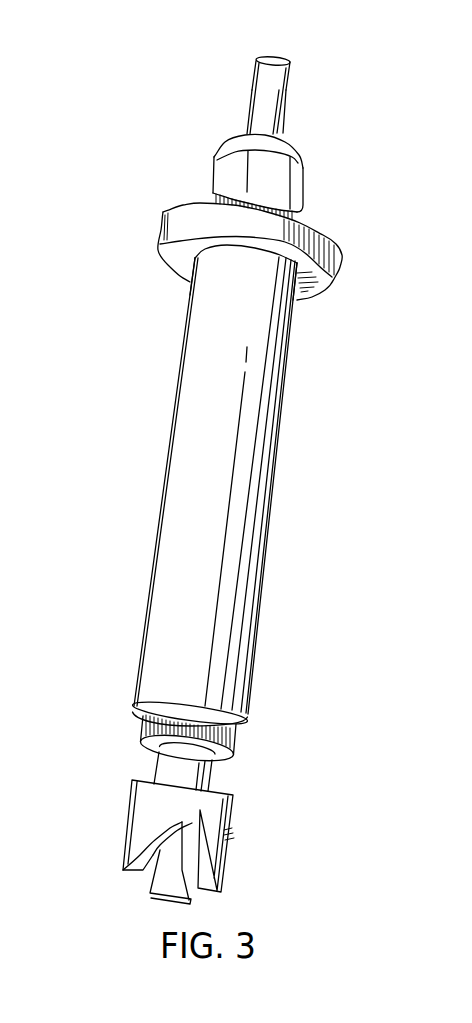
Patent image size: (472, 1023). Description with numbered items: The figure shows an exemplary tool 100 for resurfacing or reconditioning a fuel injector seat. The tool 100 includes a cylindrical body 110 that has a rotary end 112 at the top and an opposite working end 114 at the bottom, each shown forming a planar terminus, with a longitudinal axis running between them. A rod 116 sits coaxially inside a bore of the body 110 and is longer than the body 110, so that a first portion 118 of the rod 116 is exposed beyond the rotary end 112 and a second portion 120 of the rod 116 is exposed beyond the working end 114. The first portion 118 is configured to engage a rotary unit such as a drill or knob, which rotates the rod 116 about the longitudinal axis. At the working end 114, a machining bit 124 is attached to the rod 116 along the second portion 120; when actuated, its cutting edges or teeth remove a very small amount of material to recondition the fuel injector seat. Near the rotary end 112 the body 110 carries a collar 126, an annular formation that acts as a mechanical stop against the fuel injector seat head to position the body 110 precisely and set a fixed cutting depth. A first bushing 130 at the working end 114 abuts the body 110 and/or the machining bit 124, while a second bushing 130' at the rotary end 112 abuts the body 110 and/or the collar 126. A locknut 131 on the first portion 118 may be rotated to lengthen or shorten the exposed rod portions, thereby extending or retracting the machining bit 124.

The tool 100 is at (91, 441).
The body 110 is at (156, 541).
The rotary end 112 is at (191, 263).
The working end 114 is at (134, 707).
The rod 116 is at (268, 55).
The first portion of the rod 118 is at (250, 88).
The second portion of the rod 120 is at (150, 883).
The machining bit 124 is at (128, 808).
The collar 126 is at (158, 242).
The first bushing 130 is at (243, 762).
The second bushing 130' is at (306, 235).
The locknut 131 is at (230, 186).